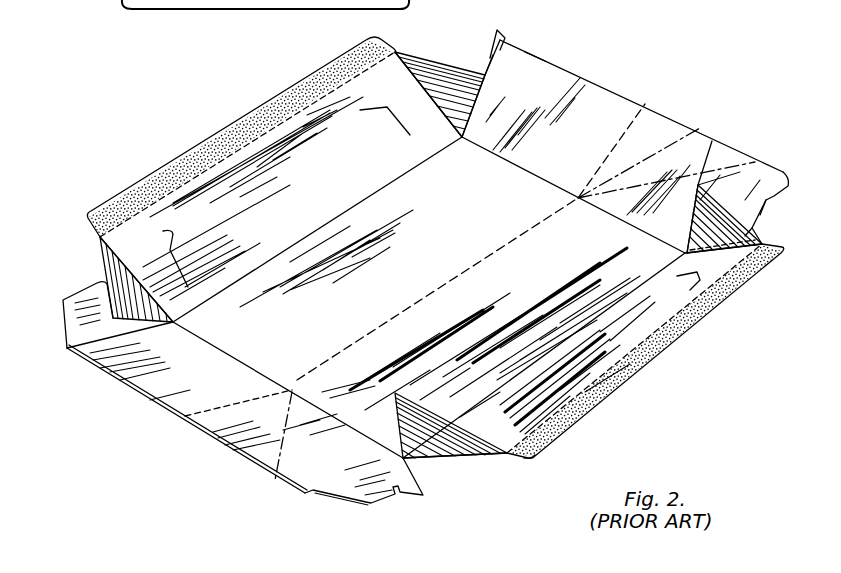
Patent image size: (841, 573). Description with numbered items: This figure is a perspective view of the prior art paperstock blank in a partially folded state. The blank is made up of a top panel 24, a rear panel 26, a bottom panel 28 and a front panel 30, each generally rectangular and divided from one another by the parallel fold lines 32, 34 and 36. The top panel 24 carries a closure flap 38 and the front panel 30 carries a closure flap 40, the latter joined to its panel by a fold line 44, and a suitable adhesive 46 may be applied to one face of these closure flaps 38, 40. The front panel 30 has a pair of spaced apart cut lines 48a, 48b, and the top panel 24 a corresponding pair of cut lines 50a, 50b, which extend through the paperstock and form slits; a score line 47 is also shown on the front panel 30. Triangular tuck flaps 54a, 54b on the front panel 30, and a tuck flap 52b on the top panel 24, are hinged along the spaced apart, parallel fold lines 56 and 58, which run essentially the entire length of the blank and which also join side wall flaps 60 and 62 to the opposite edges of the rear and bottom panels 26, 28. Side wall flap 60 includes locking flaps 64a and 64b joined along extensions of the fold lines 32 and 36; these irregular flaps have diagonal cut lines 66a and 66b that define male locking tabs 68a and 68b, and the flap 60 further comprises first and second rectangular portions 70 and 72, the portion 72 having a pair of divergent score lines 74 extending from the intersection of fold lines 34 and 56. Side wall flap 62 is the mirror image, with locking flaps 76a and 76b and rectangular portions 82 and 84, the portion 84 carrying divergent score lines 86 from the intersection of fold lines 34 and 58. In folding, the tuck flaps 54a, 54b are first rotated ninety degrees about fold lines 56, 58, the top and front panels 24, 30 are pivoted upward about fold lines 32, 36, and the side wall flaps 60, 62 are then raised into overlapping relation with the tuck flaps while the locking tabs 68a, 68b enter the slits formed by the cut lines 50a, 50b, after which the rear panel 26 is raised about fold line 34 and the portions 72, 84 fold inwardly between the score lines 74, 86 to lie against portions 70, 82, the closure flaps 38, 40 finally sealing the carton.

The top panel 24 is at (605, 336).
The rear panel 26 is at (522, 263).
The bottom panel 28 is at (434, 243).
The front panel 30 is at (310, 182).
The fold line 32 is at (633, 288).
The fold line 34 is at (430, 292).
The fold line 36 is at (350, 214).
The closure flap 38 is at (690, 335).
The closure flap 40 is at (178, 6).
The fold line 44 is at (350, 85).
The adhesive 46 is at (251, 6).
The score line 47 is at (620, 364).
The cut line 48a is at (671, 291).
The cut line 48b is at (522, 462).
The cut line 50a is at (396, 120).
The cut line 50b is at (188, 272).
The tuck flap 52b is at (723, 187).
The tuck flap 54a is at (438, 66).
The tuck flap 54b is at (100, 269).
The fold line 56 is at (526, 172).
The fold line 58 is at (248, 364).
The side wall flap 60 is at (612, 92).
The side wall flap 62 is at (150, 386).
The locking flap 64a is at (535, 48).
The locking flap 64b is at (778, 186).
The diagonal cut line 66a is at (493, 52).
The diagonal cut line 66b is at (793, 198).
The male locking tab 68a is at (485, 70).
The male locking tab 68b is at (747, 232).
The first rectangular portion 70 is at (518, 100).
The second rectangular portion 72 is at (655, 223).
The divergent score lines 74 is at (704, 128).
The locking flap 76a is at (67, 322).
The locking flap 76b is at (352, 498).
The first rectangular portion 82 is at (183, 382).
The second rectangular portion 84 is at (327, 465).
The divergent score lines 86 is at (272, 483).